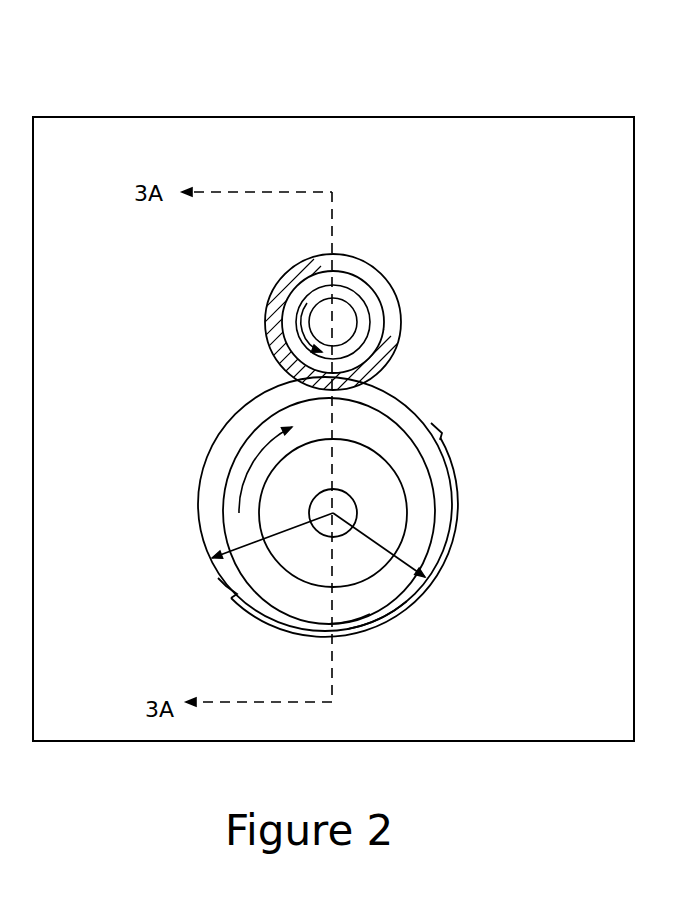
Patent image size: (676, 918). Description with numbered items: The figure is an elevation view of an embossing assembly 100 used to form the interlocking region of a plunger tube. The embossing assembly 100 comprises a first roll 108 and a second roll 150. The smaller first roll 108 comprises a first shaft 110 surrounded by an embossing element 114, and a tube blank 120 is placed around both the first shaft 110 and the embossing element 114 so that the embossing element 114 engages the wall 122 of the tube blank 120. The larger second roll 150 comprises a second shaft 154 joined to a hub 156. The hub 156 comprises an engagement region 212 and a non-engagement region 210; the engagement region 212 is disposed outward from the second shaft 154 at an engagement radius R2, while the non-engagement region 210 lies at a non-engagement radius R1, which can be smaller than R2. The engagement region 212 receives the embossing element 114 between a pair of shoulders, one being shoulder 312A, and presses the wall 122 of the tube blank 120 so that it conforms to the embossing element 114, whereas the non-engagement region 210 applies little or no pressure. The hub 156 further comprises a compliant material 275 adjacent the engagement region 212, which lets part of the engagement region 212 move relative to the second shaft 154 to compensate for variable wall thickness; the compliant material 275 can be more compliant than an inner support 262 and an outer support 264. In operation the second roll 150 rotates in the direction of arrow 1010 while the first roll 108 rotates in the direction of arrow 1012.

The embossing assembly 100 is at (582, 86).
The tube blank 120 is at (343, 253).
The wall 122 is at (272, 298).
The first roll 108 is at (352, 278).
The embossing element 114 is at (368, 317).
The first shaft 110 is at (337, 331).
The arrow 1012 is at (275, 331).
The engagement region 212 is at (205, 447).
The outer support 264 is at (378, 620).
The non-engagement region 210 is at (425, 598).
The second roll 150 is at (478, 461).
The hub 156 is at (250, 620).
The shoulder 312A is at (207, 495).
The compliant material 275 is at (385, 597).
The inner support 262 is at (430, 553).
The second shaft 154 is at (347, 514).
The arrow 1010 is at (265, 452).
The non-engagement radius R1 is at (443, 568).
The engagement radius R2 is at (240, 596).